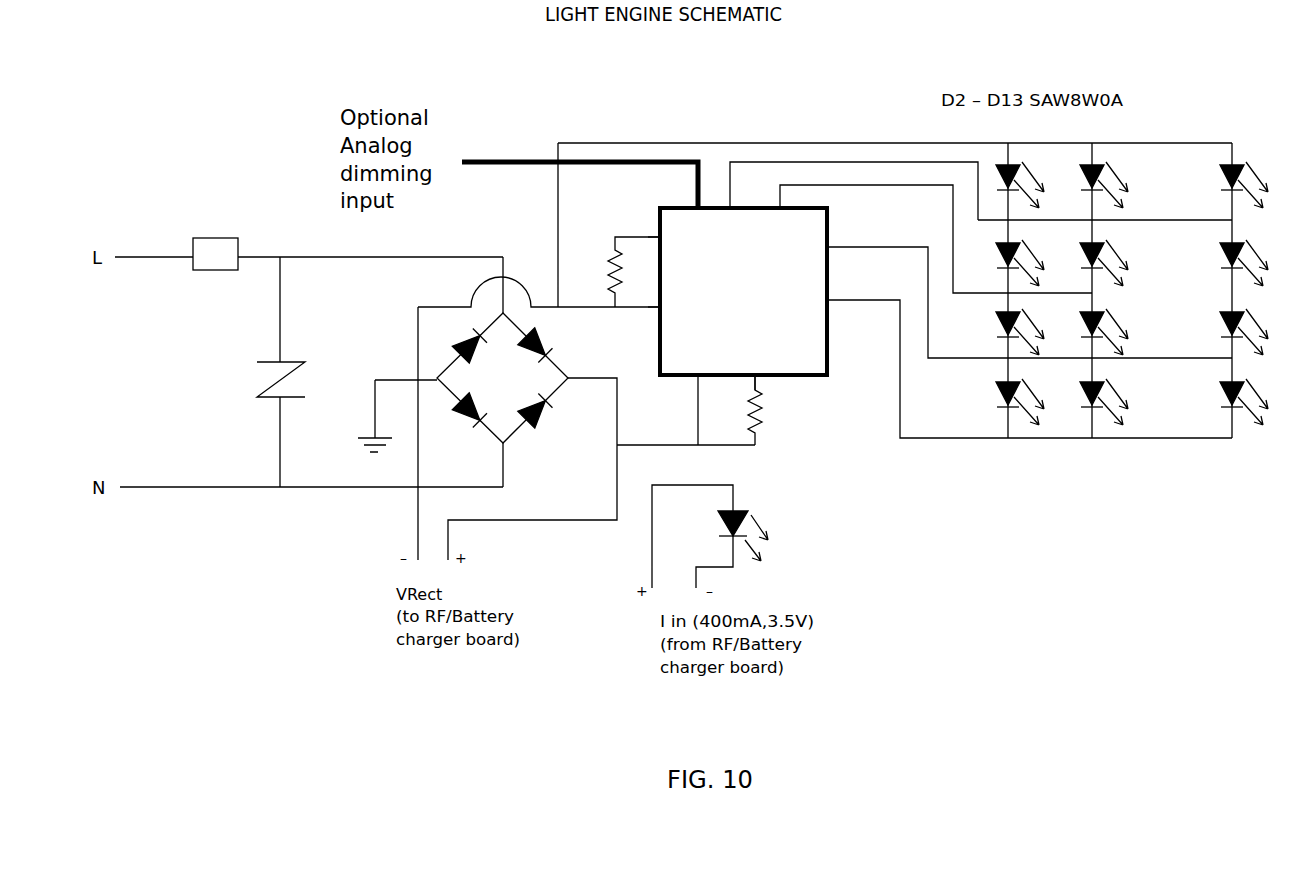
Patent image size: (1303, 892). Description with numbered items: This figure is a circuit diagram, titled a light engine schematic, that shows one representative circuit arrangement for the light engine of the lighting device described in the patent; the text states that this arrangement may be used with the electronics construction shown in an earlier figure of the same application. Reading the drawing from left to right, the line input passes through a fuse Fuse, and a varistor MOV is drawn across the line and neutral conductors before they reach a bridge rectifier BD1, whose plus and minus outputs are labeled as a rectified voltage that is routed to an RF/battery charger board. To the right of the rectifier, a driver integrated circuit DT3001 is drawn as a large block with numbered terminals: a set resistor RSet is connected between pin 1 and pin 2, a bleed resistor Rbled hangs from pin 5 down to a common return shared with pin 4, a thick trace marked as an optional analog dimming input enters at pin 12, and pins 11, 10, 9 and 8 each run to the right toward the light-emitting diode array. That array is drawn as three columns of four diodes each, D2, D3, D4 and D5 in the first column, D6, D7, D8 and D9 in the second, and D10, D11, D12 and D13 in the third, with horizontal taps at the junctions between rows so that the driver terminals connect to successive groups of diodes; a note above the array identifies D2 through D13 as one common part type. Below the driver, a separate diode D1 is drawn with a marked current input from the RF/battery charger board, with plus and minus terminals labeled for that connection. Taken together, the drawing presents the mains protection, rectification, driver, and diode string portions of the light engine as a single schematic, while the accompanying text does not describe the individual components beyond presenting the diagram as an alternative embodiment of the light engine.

The fuse Fuse is at (215, 242).
The metal oxide varistor MOV is at (263, 372).
The bridge rectifier BD1 is at (502, 378).
The LED driver IC DT3001 is at (743, 291).
The current set resistor RSet is at (613, 272).
The bleed resistor Rbled is at (783, 410).
The LED D1 (Z5P) D1 is at (738, 536).
The LED D2 is at (1026, 184).
The LED D3 is at (1029, 260).
The LED D4 is at (1029, 332).
The LED D5 is at (1030, 400).
The LED D6 is at (1111, 184).
The LED D7 is at (1112, 263).
The LED D8 is at (1113, 332).
The LED D9 is at (1110, 398).
The LED D10 is at (1255, 184).
The LED D11 is at (1255, 263).
The LED D12 is at (1255, 332).
The LED D13 is at (1254, 398).
The pin 1 of LED driver IC 1 is at (651, 233).
The pin 2 of LED driver IC 2 is at (651, 295).
The pin 4 of LED driver IC 4 is at (689, 410).
The pin 5 of LED driver IC 5 is at (744, 387).
The pin 8 of LED driver IC 8 is at (1029, 361).
The pin 9 of LED driver IC 9 is at (1029, 296).
The pin 10 of LED driver IC 10 is at (936, 239).
The pin 11 of LED driver IC 11 is at (854, 191).
The pin 12 of LED driver IC 12 is at (693, 200).